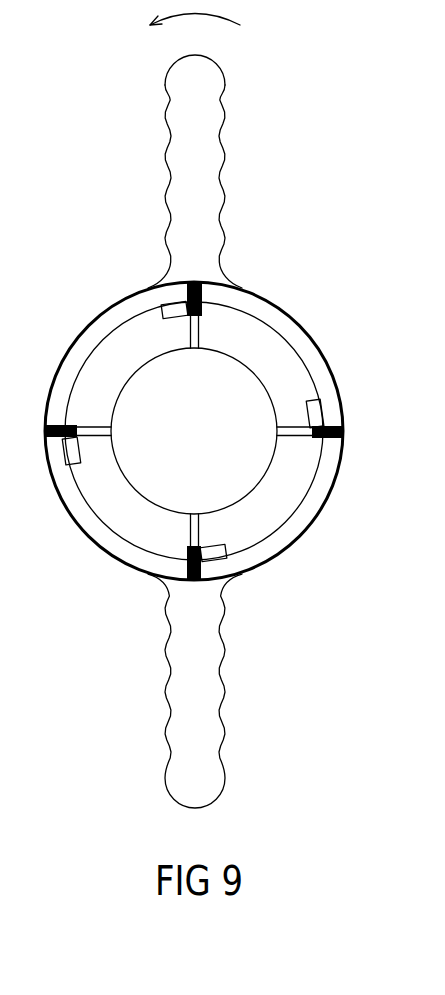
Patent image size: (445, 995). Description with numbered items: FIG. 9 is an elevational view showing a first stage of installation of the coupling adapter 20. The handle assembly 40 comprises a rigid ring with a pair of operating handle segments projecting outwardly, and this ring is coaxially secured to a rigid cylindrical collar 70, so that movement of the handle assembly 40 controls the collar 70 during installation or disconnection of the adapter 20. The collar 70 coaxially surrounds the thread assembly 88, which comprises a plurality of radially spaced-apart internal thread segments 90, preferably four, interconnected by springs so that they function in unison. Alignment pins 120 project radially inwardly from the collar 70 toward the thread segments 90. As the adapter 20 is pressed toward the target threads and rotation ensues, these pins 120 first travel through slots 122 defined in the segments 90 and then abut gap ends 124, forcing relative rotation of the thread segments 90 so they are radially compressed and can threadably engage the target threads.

The adapter 20 is at (175, 140).
The handle assembly 40 is at (213, 142).
The collar 70 is at (317, 343).
The thread assembly 88 is at (113, 505).
The thread segments 90 is at (248, 350).
The alignment pins 120 is at (203, 285).
The slots 122 is at (184, 300).
The gap ends 124 is at (162, 306).